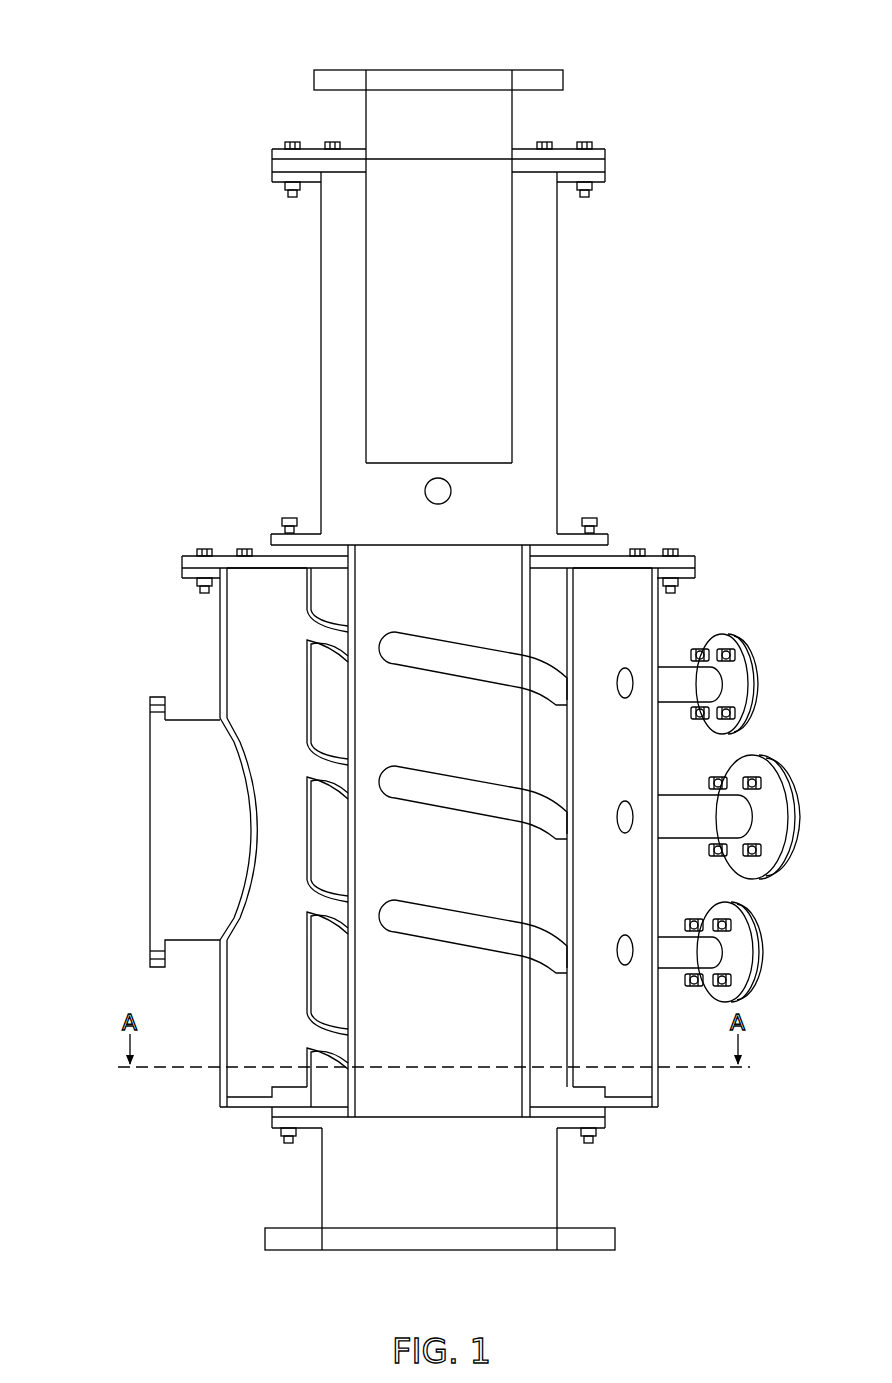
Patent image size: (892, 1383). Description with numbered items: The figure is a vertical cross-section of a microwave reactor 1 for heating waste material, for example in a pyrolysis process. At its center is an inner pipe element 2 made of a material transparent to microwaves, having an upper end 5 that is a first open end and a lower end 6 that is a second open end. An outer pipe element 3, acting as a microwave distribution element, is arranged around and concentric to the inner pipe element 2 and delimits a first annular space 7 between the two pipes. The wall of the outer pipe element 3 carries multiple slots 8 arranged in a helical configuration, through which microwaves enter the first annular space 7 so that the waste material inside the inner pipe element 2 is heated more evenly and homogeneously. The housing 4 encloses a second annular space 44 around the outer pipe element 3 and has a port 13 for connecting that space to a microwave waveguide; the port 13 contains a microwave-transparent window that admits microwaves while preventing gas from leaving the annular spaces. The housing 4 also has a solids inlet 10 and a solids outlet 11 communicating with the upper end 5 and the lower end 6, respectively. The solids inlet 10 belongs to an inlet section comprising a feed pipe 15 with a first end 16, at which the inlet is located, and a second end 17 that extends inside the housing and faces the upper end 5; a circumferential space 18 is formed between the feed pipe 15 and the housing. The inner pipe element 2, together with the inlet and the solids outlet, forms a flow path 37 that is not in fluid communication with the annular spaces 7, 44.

The mixing apparatus 1 is at (166, 328).
The inner pipe element 2 is at (517, 637).
The outer pipe element 3 is at (573, 775).
The housing 4 is at (220, 645).
The upper end 5 is at (457, 545).
The lower end 6 is at (443, 1117).
The first annular space 7 is at (555, 912).
The slots 8 is at (555, 822).
The inlet 10 is at (448, 70).
The solids outlet 11 is at (460, 1252).
The port 13 is at (150, 826).
The feed pipe 15 is at (503, 338).
The first end 16 is at (439, 231).
The second end 17 is at (407, 464).
The circumferential space 18 is at (332, 330).
The flow path 37 is at (430, 1028).
The second annular space 44 is at (245, 680).